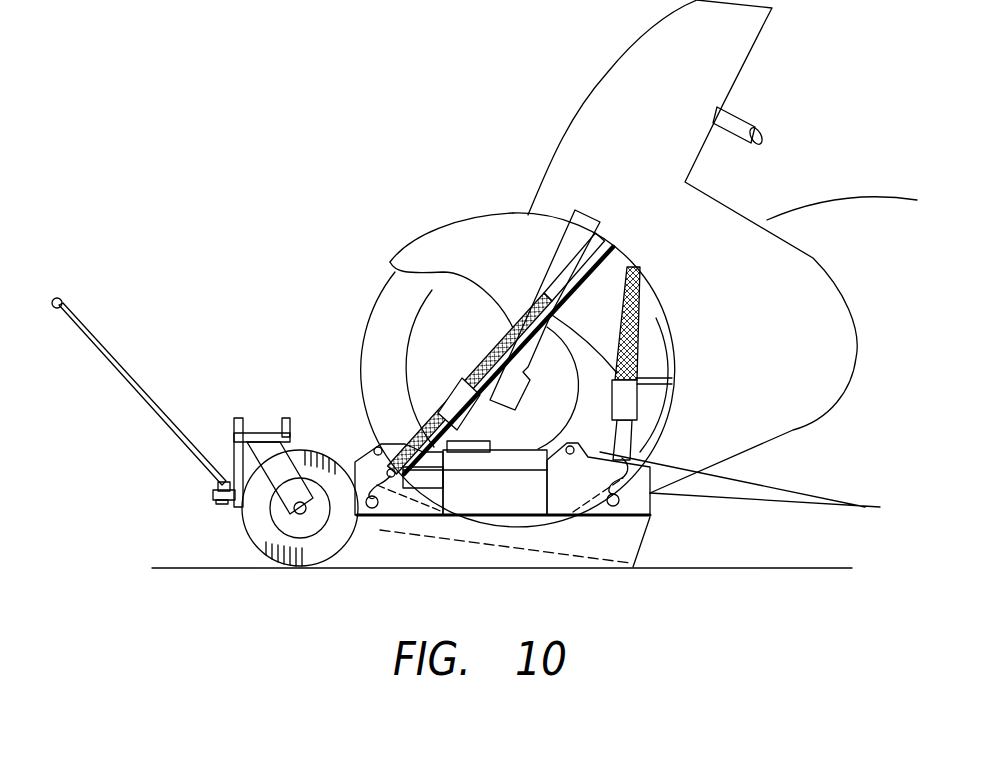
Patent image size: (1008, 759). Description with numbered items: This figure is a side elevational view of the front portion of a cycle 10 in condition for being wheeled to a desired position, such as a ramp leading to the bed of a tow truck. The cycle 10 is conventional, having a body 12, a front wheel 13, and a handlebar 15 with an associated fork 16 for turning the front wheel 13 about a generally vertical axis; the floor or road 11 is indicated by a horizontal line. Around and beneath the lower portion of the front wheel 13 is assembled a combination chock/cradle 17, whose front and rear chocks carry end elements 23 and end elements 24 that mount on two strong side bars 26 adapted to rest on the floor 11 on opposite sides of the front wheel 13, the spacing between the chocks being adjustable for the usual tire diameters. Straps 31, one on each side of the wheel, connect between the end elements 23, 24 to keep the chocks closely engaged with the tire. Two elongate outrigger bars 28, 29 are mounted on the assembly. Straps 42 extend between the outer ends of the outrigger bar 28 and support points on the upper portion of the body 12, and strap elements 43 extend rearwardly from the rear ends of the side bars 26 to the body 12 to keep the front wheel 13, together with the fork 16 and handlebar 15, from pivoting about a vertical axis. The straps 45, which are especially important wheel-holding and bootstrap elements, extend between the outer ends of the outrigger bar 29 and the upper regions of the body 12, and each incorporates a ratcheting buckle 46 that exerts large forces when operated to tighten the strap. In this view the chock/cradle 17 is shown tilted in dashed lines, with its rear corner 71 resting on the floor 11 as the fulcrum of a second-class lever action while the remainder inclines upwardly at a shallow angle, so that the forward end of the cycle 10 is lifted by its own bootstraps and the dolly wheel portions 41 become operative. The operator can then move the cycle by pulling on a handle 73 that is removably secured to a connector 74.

The cycle 10 is at (820, 172).
The floor or road 11 is at (167, 567).
The body 12 is at (897, 247).
The front wheel 13 is at (402, 307).
The handlebar 15 is at (745, 122).
The fork 16 is at (560, 258).
The combination chock/cradle 17 is at (528, 515).
The end elements 23 is at (360, 447).
The end elements 24 is at (560, 497).
The side bars 26 is at (478, 493).
The outrigger bar 28 is at (380, 517).
The outrigger bar 29 is at (620, 515).
The straps 31 is at (515, 443).
The wheel portions 41 is at (253, 520).
The straps 42 is at (437, 400).
The strap elements 43 is at (790, 492).
The straps 45 is at (640, 307).
The ratcheting buckle 46 is at (632, 398).
The rear corner 71 is at (662, 572).
The handle 73 is at (128, 370).
The connector 74 is at (213, 495).